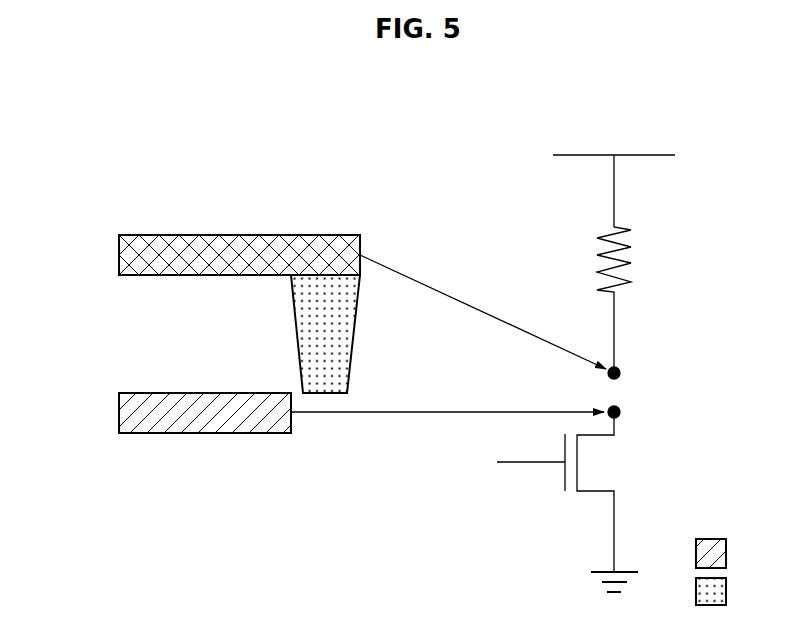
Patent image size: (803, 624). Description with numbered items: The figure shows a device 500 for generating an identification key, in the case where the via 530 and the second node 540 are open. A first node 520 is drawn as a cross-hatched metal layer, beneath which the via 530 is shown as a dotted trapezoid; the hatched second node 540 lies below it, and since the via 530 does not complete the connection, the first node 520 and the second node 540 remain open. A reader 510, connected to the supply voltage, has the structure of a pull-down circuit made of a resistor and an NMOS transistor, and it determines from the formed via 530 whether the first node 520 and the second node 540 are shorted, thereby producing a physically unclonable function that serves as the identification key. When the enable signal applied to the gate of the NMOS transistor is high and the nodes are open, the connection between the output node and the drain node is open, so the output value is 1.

The device for generating an identification key 500 is at (385, 110).
The reader 510 is at (667, 153).
The first node 520 is at (119, 252).
The via 530 is at (291, 331).
The second node 540 is at (119, 411).
The output value 1 is at (614, 350).